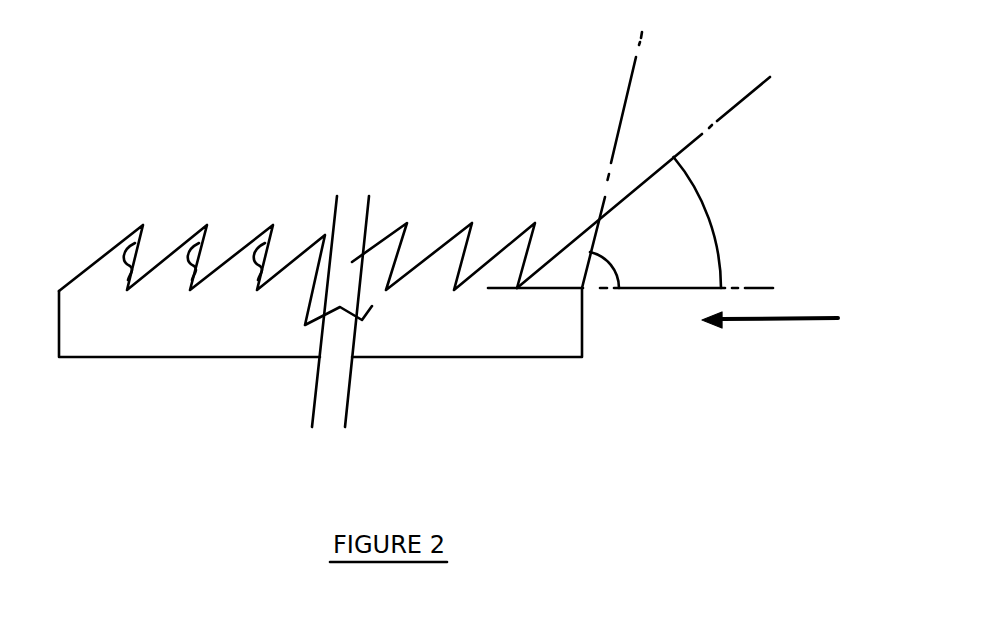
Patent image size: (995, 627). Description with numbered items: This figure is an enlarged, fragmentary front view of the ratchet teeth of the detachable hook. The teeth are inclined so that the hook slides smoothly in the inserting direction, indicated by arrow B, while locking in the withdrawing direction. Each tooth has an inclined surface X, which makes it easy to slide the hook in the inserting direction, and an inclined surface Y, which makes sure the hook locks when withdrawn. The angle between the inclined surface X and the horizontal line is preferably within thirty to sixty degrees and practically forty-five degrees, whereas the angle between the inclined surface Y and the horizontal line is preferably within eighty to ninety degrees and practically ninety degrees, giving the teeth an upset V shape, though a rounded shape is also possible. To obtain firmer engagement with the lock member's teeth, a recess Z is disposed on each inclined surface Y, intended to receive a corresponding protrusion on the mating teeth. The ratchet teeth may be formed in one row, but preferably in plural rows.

The inclined surface X is at (563, 248).
The inclined surface Y is at (588, 275).
The recess Z is at (197, 259).
The arrow B is at (790, 317).